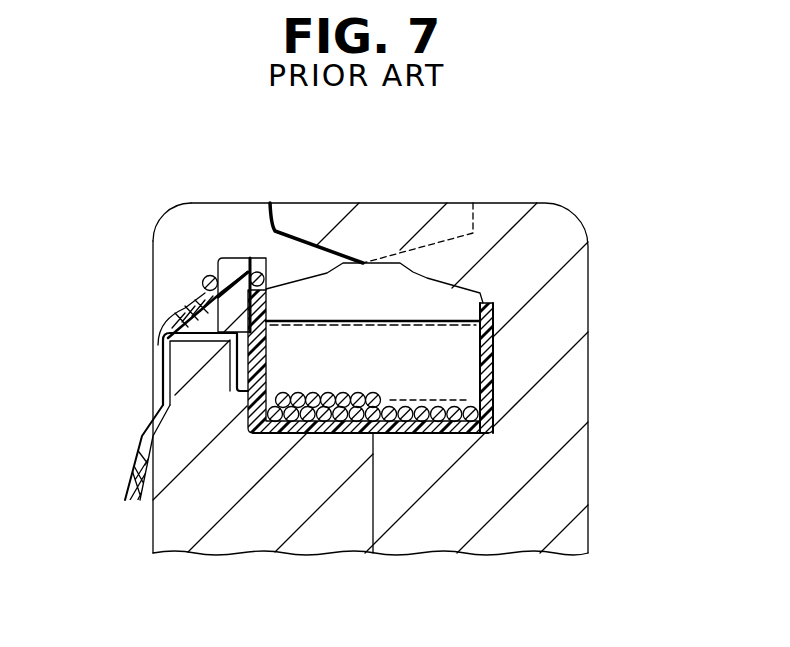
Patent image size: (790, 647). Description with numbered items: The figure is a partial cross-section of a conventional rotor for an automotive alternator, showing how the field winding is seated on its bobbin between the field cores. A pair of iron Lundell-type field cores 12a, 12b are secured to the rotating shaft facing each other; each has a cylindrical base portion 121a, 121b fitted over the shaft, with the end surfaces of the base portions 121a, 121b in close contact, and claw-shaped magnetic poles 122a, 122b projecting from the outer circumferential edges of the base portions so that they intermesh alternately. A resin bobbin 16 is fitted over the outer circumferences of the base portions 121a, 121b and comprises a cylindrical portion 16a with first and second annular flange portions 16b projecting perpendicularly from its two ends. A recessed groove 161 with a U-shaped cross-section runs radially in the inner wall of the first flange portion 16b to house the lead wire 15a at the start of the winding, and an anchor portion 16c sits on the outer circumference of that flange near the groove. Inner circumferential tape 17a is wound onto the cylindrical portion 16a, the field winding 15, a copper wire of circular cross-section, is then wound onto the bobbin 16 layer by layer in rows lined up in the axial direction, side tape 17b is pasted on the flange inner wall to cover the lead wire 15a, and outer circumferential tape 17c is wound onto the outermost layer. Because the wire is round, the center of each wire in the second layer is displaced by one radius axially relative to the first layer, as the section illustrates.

The field core 12a is at (148, 539).
The field core 12b is at (592, 487).
The field winding 15 is at (363, 367).
The lead wire 15a is at (252, 257).
The bobbin 16 is at (486, 297).
The cylindrical portion 16a is at (385, 435).
The flange portion 16b is at (485, 352).
The anchor portion 16c is at (232, 275).
The inner circumferential tape 17a is at (481, 434).
The side tape 17b is at (270, 367).
The outer circumferential tape 17c is at (427, 322).
The base portion 121a is at (282, 527).
The base portion 121b is at (457, 527).
The claw-shaped magnetic pole 122a is at (205, 220).
The claw-shaped magnetic pole 122b is at (457, 212).
The recessed groove 161 is at (243, 367).